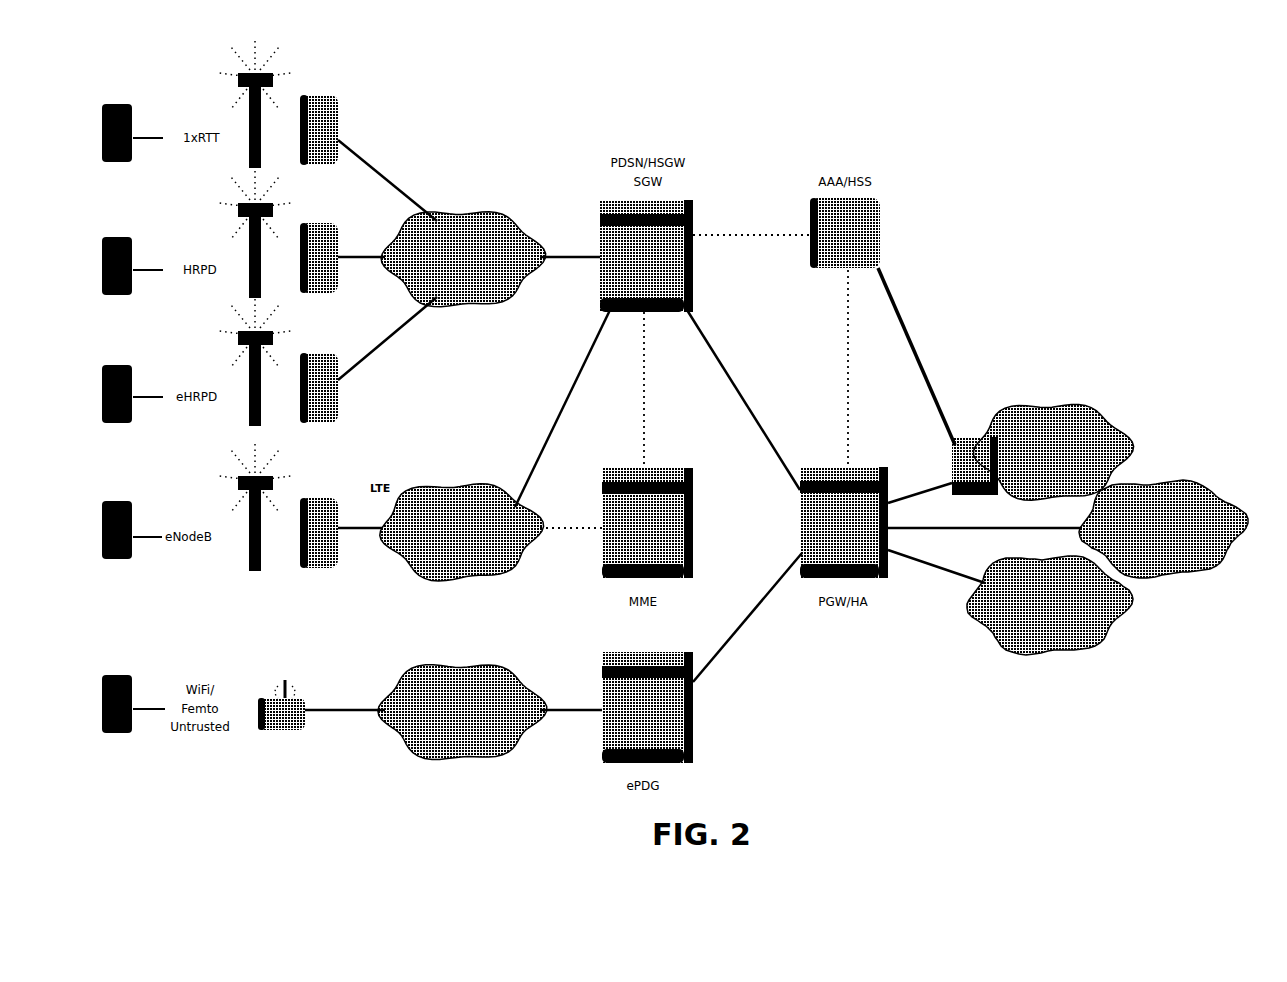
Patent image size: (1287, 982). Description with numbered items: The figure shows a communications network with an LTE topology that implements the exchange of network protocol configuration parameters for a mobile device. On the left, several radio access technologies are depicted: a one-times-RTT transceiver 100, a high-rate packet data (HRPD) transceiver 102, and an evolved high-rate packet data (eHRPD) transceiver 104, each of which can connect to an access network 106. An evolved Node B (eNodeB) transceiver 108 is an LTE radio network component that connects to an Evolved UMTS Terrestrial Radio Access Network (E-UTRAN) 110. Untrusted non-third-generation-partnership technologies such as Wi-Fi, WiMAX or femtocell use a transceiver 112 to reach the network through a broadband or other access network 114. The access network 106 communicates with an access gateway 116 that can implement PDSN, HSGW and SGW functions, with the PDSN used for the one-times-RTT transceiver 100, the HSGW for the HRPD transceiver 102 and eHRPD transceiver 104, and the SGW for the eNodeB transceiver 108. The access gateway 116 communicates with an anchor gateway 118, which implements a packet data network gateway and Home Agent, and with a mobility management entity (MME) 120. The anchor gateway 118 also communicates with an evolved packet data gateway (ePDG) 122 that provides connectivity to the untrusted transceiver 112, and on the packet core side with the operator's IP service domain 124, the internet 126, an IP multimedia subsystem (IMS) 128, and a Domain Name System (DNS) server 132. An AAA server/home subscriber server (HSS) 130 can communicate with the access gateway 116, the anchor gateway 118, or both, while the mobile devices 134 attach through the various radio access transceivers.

The 1×RTT transceiver 100 is at (338, 103).
The high-rate packet data (HRPD) transceiver 102 is at (338, 226).
The evolved high-rate packet data (eHRPD) transceiver 104 is at (338, 356).
The access network 106 is at (472, 212).
The evolved Node B (eNodeB) transceiver 108 is at (316, 498).
The Evolved UMTS Terrestrial Radio Access Network (E-UTRAN) 110 is at (468, 483).
The transceiver 112 is at (294, 698).
The WiFi/Femto/Other network 114 is at (468, 665).
The access gateway 116 is at (693, 215).
The anchor gateway 118 is at (880, 467).
The mobility management entity (MME) 120 is at (693, 488).
The evolved packet data gateway (ePDG) 122 is at (679, 652).
The operator's IP service domain 124 is at (1127, 604).
The internet 126 is at (1090, 418).
The IP multimedia subsystem (IMS) 128 is at (1208, 498).
The authentication, authorization, and accounting (AAA) server/home subscriber serve 130 is at (880, 216).
The Domain Name System (DNS) server 132 is at (955, 434).
The mobile device 134 is at (104, 104).